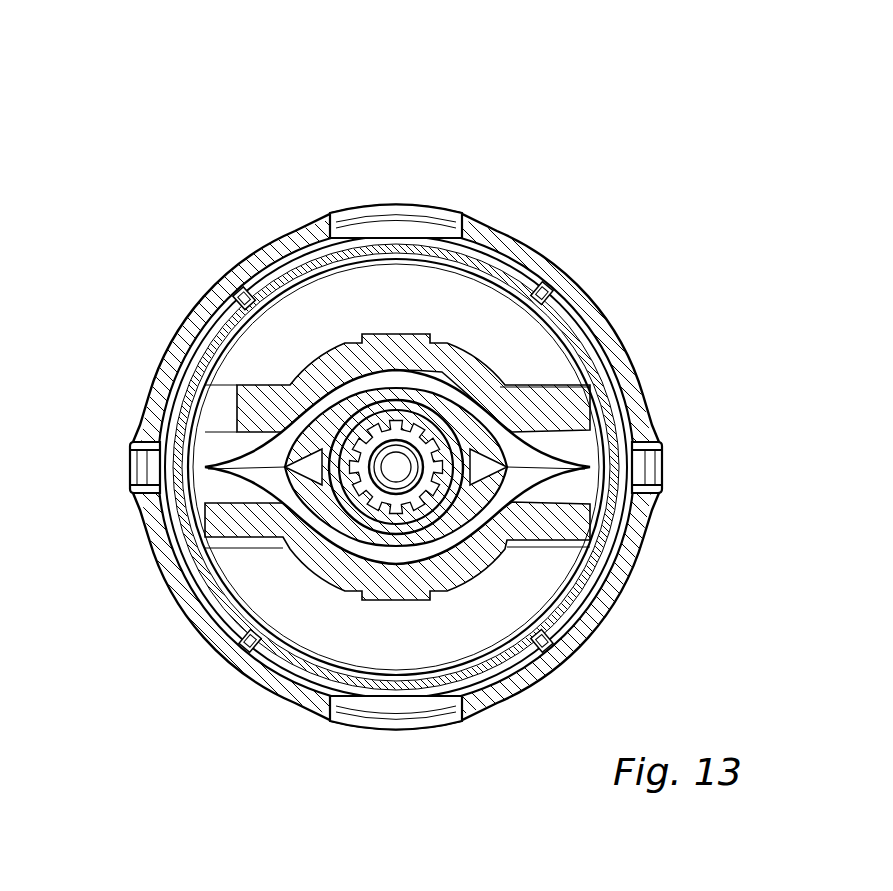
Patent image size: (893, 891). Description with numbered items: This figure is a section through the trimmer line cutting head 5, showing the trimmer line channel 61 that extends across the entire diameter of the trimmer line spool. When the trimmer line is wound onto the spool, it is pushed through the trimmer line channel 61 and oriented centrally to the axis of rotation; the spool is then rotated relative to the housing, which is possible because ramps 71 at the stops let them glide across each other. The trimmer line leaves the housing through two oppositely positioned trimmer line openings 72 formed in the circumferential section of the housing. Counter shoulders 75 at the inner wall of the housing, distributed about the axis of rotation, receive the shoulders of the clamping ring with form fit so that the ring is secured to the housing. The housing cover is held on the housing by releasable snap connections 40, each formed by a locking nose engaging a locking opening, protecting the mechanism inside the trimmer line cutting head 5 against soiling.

The trimmer line cutting head 5 is at (403, 442).
The snap connection 40 is at (339, 205).
The trimmer line channel 61 is at (492, 420).
The ramp 71 is at (130, 445).
The trimmer line opening 72 is at (663, 446).
The counter shoulder 75 is at (563, 312).